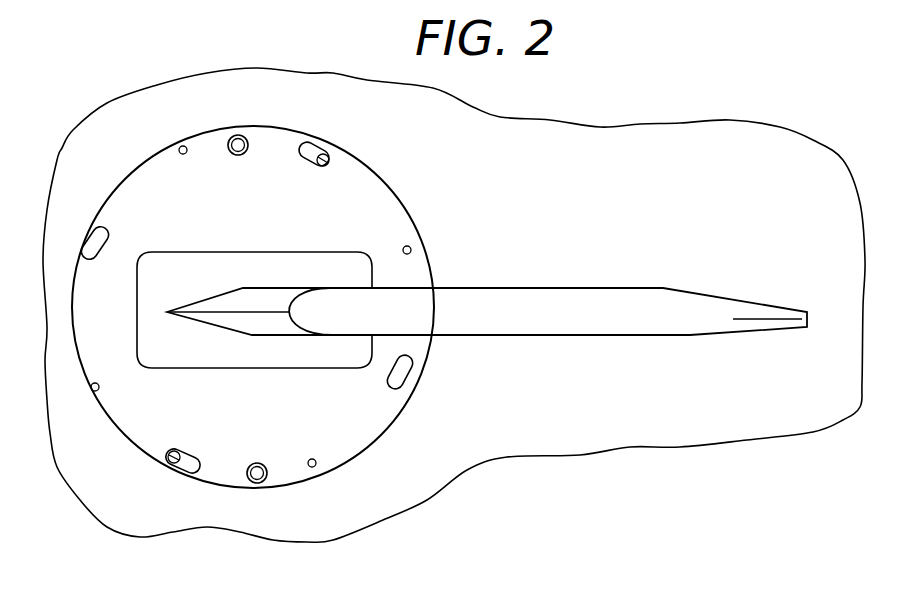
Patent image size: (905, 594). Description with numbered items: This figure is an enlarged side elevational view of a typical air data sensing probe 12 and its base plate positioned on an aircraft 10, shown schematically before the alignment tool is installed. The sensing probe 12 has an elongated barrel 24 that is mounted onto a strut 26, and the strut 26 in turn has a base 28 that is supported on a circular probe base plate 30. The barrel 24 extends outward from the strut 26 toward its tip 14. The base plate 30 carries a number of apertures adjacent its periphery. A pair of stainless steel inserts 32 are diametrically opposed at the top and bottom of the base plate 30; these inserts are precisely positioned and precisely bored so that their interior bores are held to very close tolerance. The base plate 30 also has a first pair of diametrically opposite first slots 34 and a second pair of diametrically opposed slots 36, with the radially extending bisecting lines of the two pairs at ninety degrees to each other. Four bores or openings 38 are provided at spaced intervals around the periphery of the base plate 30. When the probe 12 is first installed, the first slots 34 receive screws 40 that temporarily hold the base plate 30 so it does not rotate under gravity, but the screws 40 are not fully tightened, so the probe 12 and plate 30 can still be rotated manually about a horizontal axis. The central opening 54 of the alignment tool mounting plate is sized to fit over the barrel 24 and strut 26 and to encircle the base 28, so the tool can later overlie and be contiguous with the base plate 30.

The knife assembly / fragmentary environment 10 is at (538, 132).
The air data sensing probe 12 is at (401, 194).
The blade tip 14 is at (750, 317).
The barrel 24 is at (555, 305).
The strut 26 is at (253, 327).
The base 28 is at (228, 262).
The probe base plate 30 is at (350, 183).
The stainless steel inserts 32 is at (247, 137).
The first slots 34 is at (310, 150).
The second slots 36 is at (107, 230).
The bores or openings 38 is at (173, 143).
The screws 40 is at (320, 170).
The central opening 54 is at (278, 368).